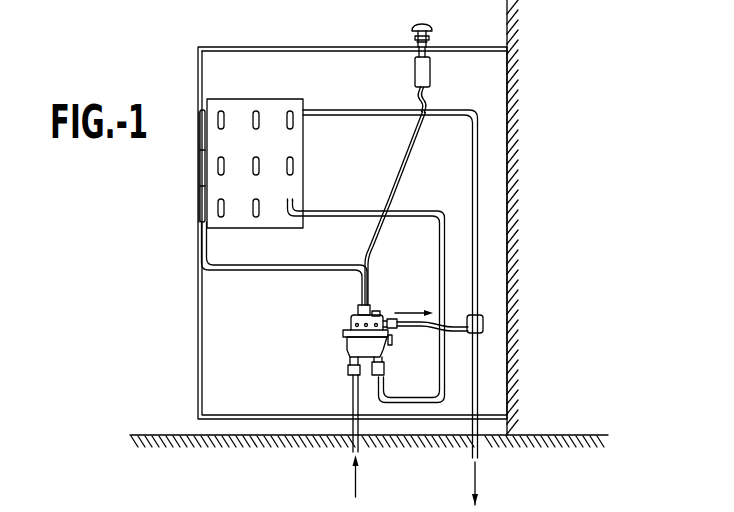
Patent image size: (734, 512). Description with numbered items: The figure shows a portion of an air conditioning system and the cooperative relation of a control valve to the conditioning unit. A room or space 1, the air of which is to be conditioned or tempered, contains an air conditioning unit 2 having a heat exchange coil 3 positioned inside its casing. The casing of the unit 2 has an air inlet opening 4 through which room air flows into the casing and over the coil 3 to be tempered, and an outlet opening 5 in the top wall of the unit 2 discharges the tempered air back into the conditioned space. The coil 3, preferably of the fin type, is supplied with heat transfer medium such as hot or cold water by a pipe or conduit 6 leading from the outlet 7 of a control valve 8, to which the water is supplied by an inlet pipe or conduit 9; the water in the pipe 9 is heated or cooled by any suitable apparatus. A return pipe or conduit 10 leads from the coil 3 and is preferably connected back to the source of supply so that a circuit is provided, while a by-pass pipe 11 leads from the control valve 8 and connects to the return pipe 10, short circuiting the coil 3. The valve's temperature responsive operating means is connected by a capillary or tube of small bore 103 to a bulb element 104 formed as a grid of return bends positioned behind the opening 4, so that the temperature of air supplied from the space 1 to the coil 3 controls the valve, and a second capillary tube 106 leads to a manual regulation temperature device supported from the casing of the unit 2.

The room or space 1 is at (335, 233).
The air conditioning unit 2 is at (198, 345).
The heat exchange coil 3 is at (291, 229).
The air inlet opening 4 is at (197, 207).
The outlet opening 5 is at (253, 48).
The pipe or conduit 6 is at (353, 210).
The outlet 7 is at (384, 360).
The control valve 8 is at (340, 354).
The inlet pipe or conduit 9 is at (352, 393).
The return pipe or conduit 10 is at (449, 110).
The by-pass pipe 11 is at (424, 331).
The capillary or tube of small bore 103 is at (312, 271).
The bulb element 104 is at (199, 165).
The capillary or tube of small bore 106 is at (395, 197).